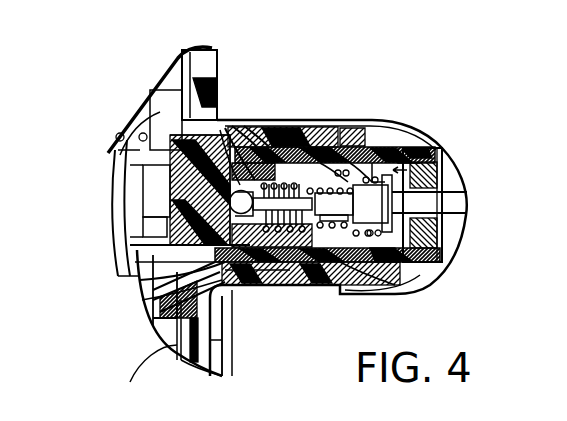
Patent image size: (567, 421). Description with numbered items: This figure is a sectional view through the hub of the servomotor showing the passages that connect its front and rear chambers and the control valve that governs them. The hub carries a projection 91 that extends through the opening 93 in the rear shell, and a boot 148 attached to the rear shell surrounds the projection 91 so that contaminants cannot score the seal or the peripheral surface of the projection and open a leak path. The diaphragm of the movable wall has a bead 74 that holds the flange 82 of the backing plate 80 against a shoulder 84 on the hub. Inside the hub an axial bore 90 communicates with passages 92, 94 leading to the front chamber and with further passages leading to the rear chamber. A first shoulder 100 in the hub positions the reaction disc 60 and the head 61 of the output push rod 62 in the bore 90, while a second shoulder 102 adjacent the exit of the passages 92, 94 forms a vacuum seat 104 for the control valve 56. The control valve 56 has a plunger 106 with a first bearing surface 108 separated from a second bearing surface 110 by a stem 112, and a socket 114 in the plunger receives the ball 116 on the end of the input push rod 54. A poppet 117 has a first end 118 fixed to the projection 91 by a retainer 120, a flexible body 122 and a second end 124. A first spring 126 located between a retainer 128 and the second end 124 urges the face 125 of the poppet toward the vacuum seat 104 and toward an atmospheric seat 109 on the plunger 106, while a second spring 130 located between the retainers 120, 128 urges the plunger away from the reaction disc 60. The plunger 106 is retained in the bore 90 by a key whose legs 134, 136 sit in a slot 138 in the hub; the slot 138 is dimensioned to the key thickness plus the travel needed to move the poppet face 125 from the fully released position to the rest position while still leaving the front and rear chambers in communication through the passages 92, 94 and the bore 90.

The push rod 54 is at (450, 207).
The control valve 56 is at (440, 162).
The reaction disc 60 is at (120, 162).
The head 61 is at (122, 177).
The push rod 62 is at (127, 197).
The bead 74 is at (205, 355).
The backing plate 80 is at (177, 352).
The flange 82 is at (163, 335).
The shoulder 84 is at (152, 330).
The axial bore 90 is at (425, 230).
The projection 91 is at (407, 264).
The passage 92 is at (140, 302).
The opening 93 is at (335, 133).
The passage 94 is at (178, 118).
The first shoulder 100 is at (155, 124).
The second shoulder 102 is at (275, 288).
The vacuum seat 104 is at (278, 278).
The plunger 106 is at (135, 230).
The first bearing surface 108 is at (135, 252).
The atmospheric seat 109 is at (268, 298).
The second bearing surface 110 is at (243, 300).
The stem 112 is at (142, 284).
The socket 114 is at (236, 120).
The ball 116 is at (309, 209).
The poppet 117 is at (282, 140).
The first end 118 is at (352, 142).
The retainer 120 is at (372, 147).
The flexible body 122 is at (300, 138).
The second end 124 is at (262, 140).
The face 125 is at (250, 140).
The first spring 126 is at (373, 260).
The retainer 128 is at (440, 175).
The second spring 130 is at (398, 148).
The leg 134 is at (172, 110).
The leg 136 is at (140, 264).
The slot 138 is at (220, 84).
The boot 148 is at (300, 132).